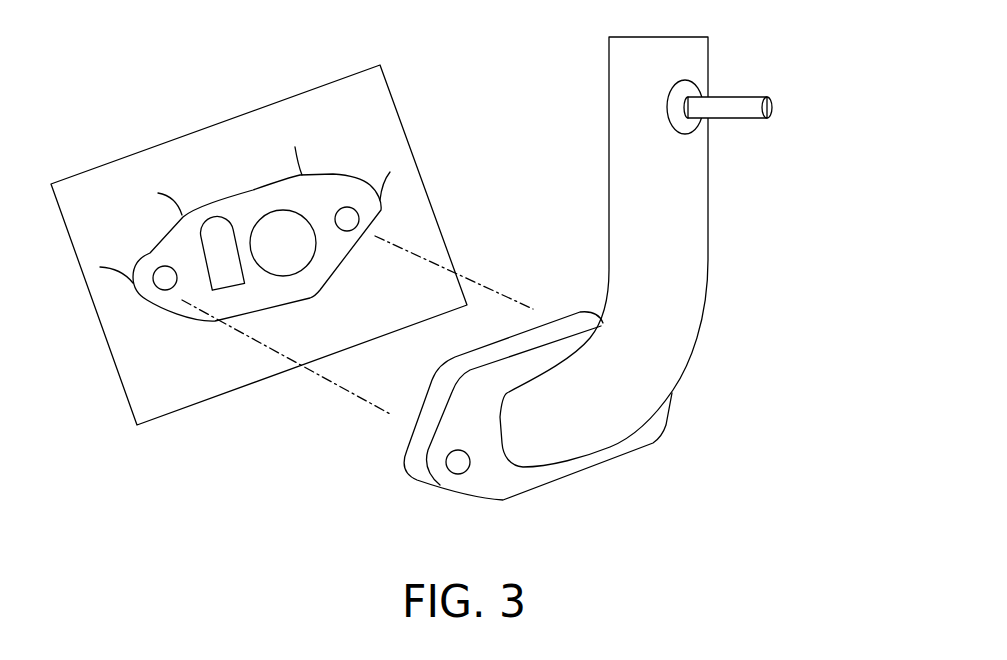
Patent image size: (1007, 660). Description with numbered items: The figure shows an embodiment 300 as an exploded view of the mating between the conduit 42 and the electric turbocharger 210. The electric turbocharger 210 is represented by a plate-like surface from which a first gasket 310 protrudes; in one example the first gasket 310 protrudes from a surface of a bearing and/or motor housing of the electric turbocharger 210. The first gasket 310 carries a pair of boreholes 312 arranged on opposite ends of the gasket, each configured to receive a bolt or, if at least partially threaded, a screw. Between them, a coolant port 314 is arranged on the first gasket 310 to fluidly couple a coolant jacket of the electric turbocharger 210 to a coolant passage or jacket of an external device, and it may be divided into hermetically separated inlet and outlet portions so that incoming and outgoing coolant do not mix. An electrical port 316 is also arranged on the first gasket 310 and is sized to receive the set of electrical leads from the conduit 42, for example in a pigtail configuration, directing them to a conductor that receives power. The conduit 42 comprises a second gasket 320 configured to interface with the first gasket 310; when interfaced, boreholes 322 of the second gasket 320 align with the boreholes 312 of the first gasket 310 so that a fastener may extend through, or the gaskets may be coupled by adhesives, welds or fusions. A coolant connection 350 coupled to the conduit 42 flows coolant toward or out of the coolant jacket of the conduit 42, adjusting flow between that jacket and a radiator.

The electric turbocharger 210 is at (308, 90).
The embodiment 300 is at (777, 33).
The first gasket 310 is at (253, 188).
The boreholes 312 is at (160, 267).
The coolant port 314 is at (223, 218).
The electrical port 316 is at (269, 253).
The second gasket 320 is at (533, 490).
The boreholes 322 is at (457, 475).
The coolant connection 350 is at (753, 97).
The conduit 42 is at (708, 252).